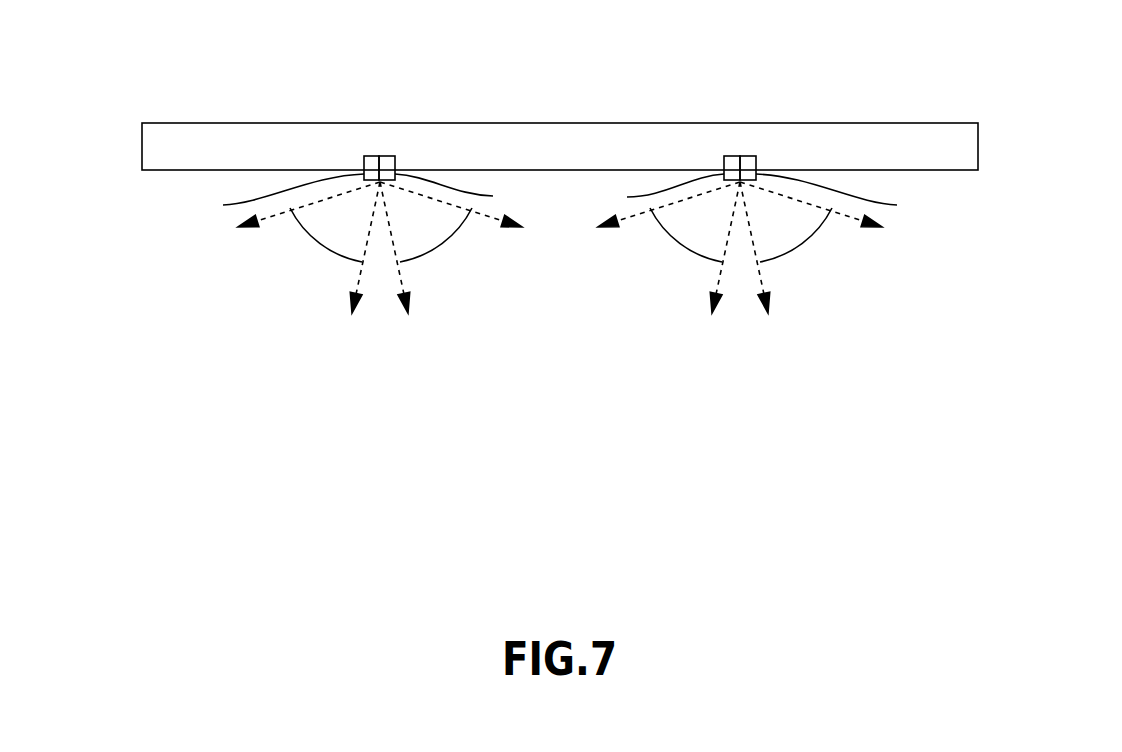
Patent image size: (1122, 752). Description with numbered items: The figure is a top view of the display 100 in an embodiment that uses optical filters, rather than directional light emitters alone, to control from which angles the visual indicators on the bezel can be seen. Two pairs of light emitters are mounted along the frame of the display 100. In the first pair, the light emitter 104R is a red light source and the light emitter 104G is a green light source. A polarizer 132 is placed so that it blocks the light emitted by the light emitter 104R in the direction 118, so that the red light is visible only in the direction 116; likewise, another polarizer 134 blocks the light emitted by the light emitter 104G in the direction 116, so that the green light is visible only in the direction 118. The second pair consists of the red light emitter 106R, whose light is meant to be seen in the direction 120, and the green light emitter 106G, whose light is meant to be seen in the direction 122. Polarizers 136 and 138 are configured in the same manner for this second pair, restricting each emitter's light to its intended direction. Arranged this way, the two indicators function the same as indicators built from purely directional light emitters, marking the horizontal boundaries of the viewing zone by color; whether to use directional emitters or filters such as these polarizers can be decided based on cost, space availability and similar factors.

The 3D display 100 is at (1004, 72).
The first directional light emitter 104R is at (372, 155).
The second directional light emitter 104G is at (386, 155).
The second directional light emitter 106G is at (733, 155).
The first directional light emitter 106R is at (747, 155).
The direction 116 is at (315, 248).
The direction 118 is at (445, 248).
The direction 120 is at (805, 248).
The direction 122 is at (675, 248).
The polarizer 132 is at (275, 197).
The polarizer 134 is at (465, 193).
The polarizer 136 is at (654, 193).
The polarizer 138 is at (846, 197).